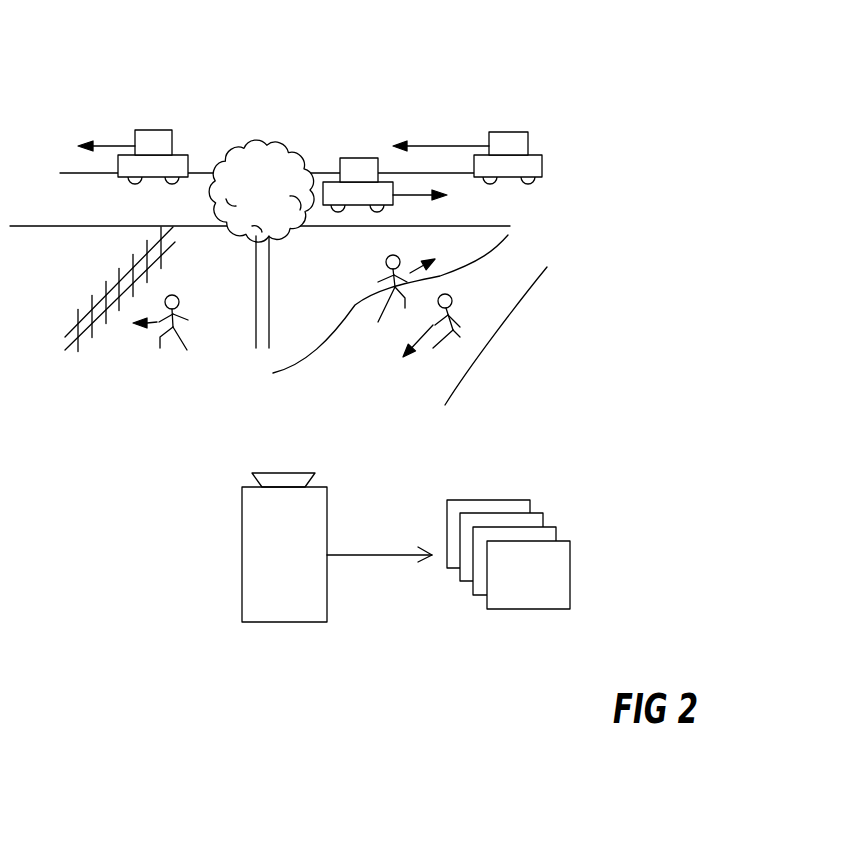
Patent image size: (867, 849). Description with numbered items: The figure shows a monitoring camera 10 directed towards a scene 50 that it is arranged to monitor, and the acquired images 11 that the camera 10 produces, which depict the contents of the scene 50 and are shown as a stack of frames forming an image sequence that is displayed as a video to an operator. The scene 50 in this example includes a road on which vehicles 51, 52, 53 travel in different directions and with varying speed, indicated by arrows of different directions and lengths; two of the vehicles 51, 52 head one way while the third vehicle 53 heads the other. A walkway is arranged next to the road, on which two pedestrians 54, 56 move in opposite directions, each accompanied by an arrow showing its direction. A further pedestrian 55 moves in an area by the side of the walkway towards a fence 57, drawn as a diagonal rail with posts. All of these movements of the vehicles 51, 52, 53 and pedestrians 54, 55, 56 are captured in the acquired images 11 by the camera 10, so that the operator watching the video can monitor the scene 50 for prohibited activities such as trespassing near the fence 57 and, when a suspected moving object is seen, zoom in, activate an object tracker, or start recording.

The monitoring camera 10 is at (270, 533).
The acquired images 11 is at (563, 512).
The scene 50 is at (380, 103).
The vehicle 51 is at (133, 157).
The vehicle 52 is at (467, 158).
The vehicle 53 is at (385, 185).
The pedestrian 54 is at (387, 283).
The pedestrian 55 is at (457, 310).
The pedestrian 56 is at (180, 308).
The fence 57 is at (118, 280).